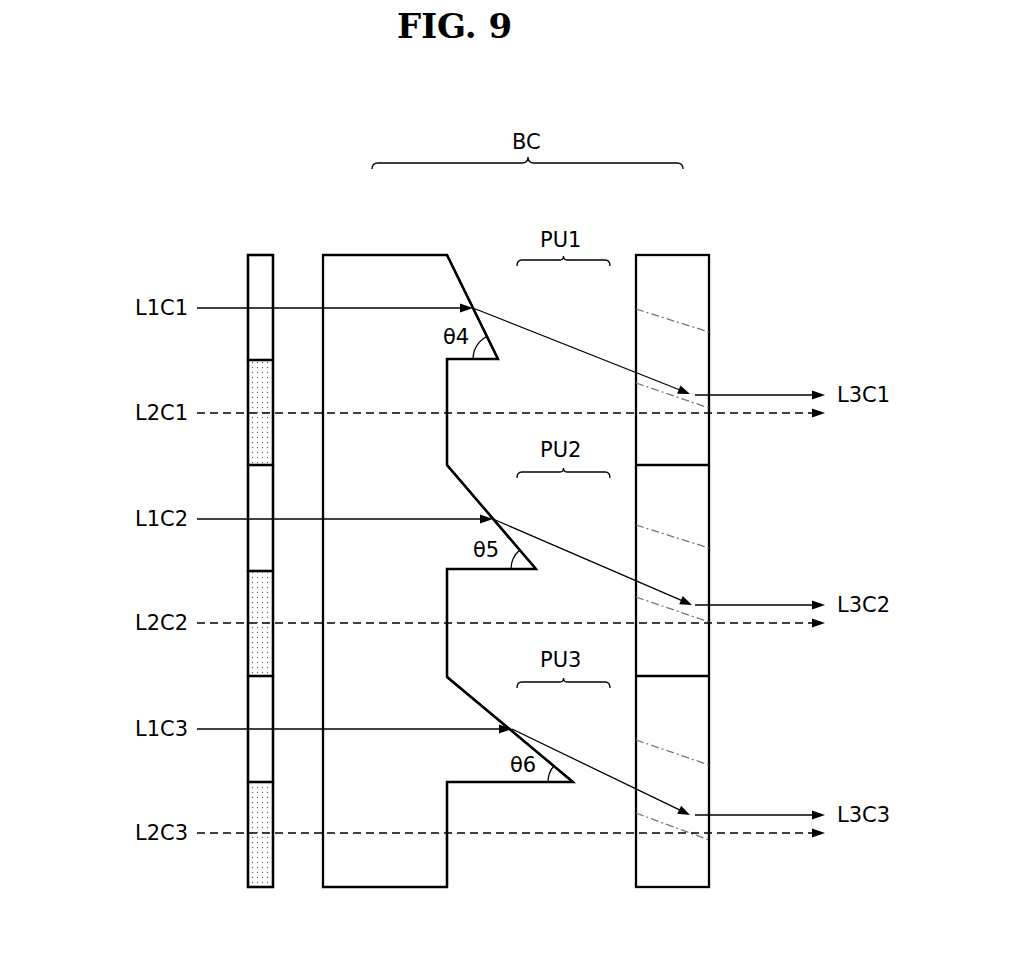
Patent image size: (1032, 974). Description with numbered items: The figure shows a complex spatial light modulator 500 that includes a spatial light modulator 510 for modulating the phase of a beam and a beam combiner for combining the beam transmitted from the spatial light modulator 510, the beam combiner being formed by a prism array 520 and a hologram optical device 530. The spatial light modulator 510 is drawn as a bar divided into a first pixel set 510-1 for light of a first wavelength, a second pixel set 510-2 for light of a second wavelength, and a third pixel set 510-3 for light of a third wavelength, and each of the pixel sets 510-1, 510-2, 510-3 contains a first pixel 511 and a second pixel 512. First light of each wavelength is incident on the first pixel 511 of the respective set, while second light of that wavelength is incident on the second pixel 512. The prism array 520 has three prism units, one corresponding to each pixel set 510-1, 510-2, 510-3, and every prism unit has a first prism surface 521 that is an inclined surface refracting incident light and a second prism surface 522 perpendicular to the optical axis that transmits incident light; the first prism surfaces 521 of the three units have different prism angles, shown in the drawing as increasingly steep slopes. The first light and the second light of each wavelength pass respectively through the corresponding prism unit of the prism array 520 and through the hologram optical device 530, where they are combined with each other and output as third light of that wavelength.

The complex spatial light modulator 500 is at (800, 205).
The spatial light modulator 510 is at (261, 255).
The first pixel set 510-1 is at (125, 333).
The second pixel set 510-2 is at (125, 544).
The third pixel set 510-3 is at (125, 754).
The first pixel 511 is at (248, 333).
The second pixel 512 is at (248, 386).
The prism array 520 is at (385, 255).
The first prism surface 521 is at (467, 277).
The second prism surface 522 is at (447, 391).
The hologram optical device 530 is at (672, 255).